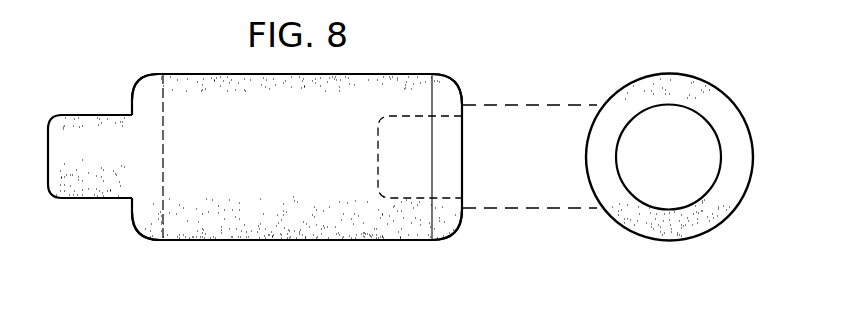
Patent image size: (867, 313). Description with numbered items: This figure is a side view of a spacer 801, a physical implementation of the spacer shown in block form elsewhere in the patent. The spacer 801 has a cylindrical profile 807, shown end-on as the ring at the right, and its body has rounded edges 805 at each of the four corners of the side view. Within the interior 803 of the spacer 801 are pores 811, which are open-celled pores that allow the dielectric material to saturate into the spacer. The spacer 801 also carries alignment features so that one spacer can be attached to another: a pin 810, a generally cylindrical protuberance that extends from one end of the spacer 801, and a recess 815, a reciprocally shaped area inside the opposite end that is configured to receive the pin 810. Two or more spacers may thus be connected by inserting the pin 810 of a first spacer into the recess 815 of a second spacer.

The spacer 801 is at (232, 242).
The interior 803 is at (317, 168).
The rounded edges 805 is at (140, 83).
The cylindrical profile 807 is at (701, 81).
The pin 810 is at (719, 138).
The pores 811 is at (323, 230).
The recess 815 is at (455, 156).